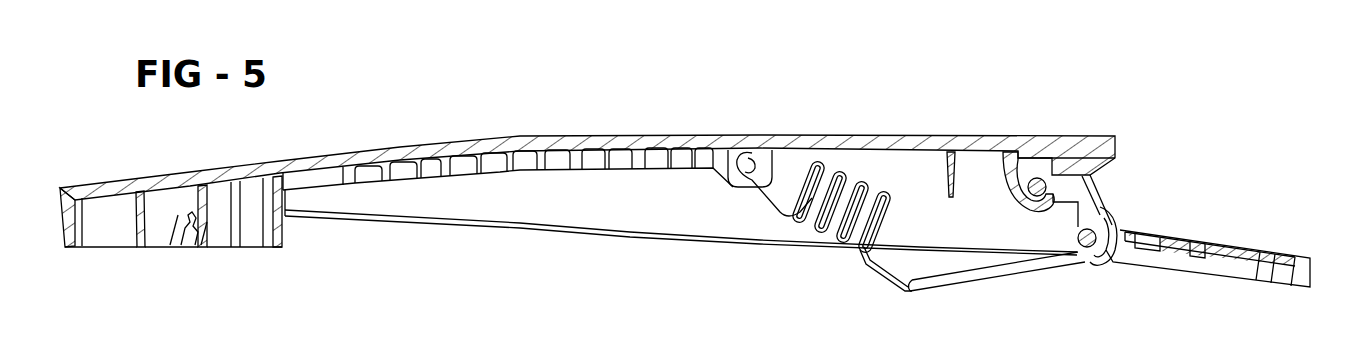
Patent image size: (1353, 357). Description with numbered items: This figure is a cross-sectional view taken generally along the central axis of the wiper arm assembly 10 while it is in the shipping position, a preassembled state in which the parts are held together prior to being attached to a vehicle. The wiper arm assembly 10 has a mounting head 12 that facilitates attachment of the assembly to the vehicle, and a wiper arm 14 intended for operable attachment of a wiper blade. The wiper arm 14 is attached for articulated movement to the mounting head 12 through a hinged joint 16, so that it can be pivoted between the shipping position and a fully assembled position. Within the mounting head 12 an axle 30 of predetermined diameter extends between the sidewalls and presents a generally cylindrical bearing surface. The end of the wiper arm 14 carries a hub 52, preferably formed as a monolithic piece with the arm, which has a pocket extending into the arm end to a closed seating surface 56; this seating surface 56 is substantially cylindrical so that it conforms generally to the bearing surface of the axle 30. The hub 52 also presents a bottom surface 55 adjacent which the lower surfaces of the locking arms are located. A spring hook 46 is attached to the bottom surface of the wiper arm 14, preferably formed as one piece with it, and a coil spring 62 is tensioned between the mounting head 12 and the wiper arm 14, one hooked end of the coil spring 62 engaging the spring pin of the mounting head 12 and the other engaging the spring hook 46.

The wiper arm assembly 10 is at (764, 92).
The mounting head 12 is at (1258, 250).
The wiper arm 14 is at (692, 135).
The hinged joint 16 is at (1063, 118).
The axle 30 is at (1060, 165).
The spring hook 46 is at (728, 150).
The hub 52 is at (1104, 183).
The bottom surface of the hub 55 is at (953, 262).
The seating surface 56 is at (1040, 170).
The coil spring 62 is at (882, 277).